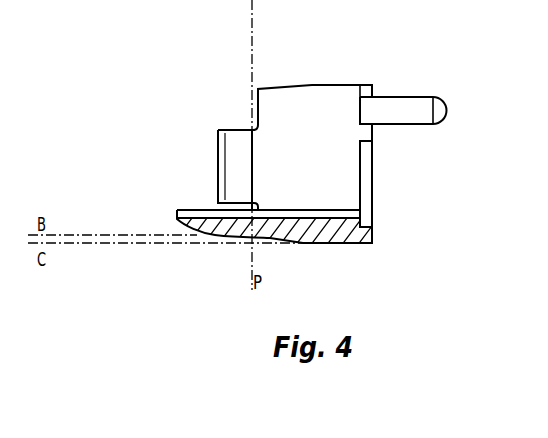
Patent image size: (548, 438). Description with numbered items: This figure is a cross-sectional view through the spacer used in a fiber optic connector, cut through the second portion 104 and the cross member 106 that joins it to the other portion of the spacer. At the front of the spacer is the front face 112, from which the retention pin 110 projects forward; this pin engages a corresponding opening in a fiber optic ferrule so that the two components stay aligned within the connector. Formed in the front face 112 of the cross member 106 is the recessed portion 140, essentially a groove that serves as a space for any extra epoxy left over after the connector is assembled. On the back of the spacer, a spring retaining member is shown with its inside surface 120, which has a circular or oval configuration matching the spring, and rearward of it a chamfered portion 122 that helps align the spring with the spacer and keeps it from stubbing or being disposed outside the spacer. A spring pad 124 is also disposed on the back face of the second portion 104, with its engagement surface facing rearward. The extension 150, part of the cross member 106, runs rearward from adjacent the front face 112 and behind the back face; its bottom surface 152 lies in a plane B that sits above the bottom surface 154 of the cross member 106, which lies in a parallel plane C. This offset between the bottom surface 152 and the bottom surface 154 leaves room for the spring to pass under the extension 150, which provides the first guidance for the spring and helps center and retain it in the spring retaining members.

The second portion 104 is at (313, 85).
The cross member 106 is at (372, 239).
The retention pin 110 is at (416, 97).
The front face 112 is at (372, 158).
The inside surface 120 is at (238, 129).
The chamfered portion 122 is at (218, 152).
The spring pad 124 is at (252, 178).
The recessed portion 140 is at (362, 193).
The extension 150 is at (178, 217).
The bottom surface of extension 152 is at (219, 238).
The bottom surface of cross member 154 is at (345, 244).